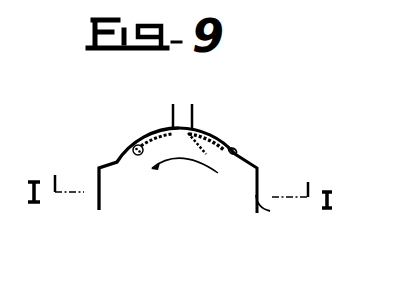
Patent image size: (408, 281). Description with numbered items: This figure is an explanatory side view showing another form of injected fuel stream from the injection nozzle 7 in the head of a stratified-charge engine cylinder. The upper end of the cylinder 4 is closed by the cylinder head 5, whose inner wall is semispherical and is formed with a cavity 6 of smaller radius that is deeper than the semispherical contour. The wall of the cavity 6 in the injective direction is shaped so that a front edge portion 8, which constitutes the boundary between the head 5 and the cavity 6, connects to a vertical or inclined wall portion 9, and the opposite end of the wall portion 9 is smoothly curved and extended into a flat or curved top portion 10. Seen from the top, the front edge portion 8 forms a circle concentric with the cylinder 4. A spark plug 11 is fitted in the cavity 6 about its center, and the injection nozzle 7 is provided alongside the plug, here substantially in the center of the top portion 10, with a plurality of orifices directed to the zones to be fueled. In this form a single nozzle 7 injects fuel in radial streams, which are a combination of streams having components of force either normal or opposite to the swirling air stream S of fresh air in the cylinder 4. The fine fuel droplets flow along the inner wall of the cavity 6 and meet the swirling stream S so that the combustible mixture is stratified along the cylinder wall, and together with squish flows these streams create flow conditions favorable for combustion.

The cylinder 4 is at (233, 183).
The cylinder head 5 is at (111, 160).
The cavity 6 is at (165, 127).
The injection nozzle 7 is at (196, 118).
The front edge portion 8 is at (243, 153).
The wall portion 9 is at (239, 154).
The top portion 10 is at (143, 132).
The spark plug 11 is at (141, 166).
The swirling air stream S is at (213, 171).